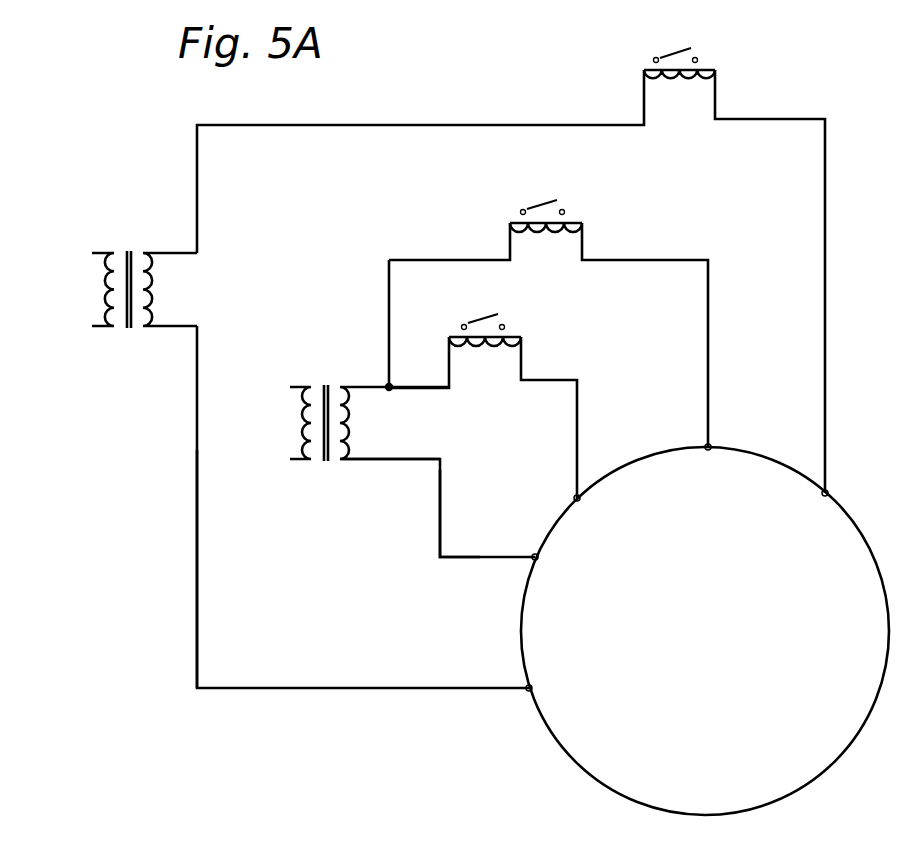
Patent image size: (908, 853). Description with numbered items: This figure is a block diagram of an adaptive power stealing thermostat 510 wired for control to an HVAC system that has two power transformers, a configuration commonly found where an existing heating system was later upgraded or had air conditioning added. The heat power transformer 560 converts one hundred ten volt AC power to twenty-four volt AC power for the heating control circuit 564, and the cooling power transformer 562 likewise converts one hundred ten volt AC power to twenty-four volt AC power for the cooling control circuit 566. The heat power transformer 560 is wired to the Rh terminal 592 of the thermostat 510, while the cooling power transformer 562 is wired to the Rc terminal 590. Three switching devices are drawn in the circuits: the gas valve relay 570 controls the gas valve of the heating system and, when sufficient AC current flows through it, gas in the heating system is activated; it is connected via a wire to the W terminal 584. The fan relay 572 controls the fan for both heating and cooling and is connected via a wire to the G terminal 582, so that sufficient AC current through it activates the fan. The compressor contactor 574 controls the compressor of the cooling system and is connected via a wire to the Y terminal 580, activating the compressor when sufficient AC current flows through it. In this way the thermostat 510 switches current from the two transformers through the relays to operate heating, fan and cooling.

The adaptive power stealing thermostat 510 is at (722, 798).
The heat power transformer 560 is at (128, 350).
The cooling power transformer 562 is at (326, 476).
The heating control circuit 564 is at (196, 630).
The cooling control circuit 566 is at (440, 542).
The gas valve relay 570 is at (634, 41).
The fan relay 572 is at (582, 190).
The compressor contactor 574 is at (518, 297).
The Y terminal 580 is at (574, 495).
The G terminal 582 is at (706, 445).
The W terminal 584 is at (823, 496).
The Rc terminal 590 is at (533, 560).
The Rh terminal 592 is at (528, 691).